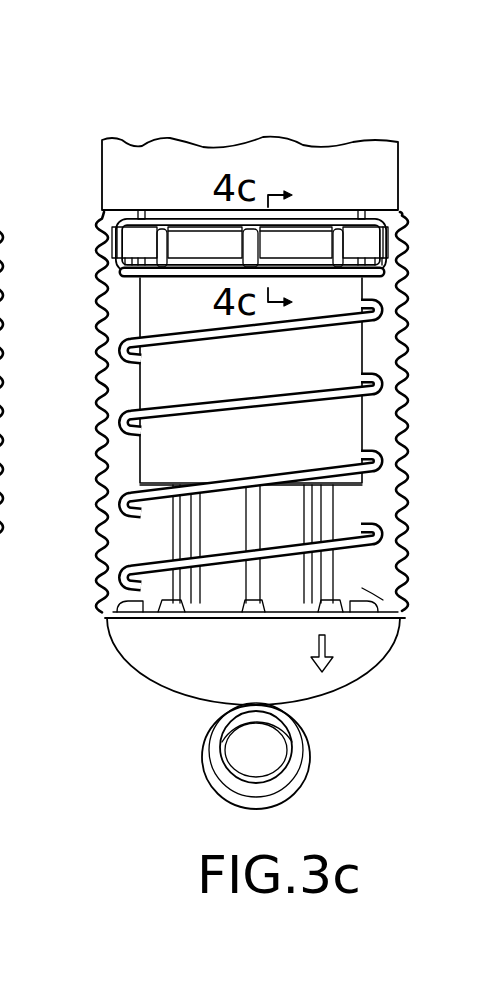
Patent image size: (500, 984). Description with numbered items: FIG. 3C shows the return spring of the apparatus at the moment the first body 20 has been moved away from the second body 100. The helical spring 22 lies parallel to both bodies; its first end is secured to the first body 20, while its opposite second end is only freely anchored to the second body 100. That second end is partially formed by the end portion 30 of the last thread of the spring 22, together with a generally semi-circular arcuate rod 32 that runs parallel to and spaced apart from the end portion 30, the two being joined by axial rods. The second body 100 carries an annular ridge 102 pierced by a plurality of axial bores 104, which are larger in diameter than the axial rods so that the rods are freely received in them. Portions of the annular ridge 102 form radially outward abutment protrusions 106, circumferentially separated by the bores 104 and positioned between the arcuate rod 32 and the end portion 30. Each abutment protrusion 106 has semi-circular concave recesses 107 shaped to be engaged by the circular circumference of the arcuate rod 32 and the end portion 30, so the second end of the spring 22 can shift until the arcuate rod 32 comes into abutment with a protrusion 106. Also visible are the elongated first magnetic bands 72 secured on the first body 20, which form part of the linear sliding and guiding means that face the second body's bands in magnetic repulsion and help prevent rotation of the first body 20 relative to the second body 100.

The second body 100 is at (100, 160).
The annular ridge 102 is at (378, 238).
The axial bores 104 is at (158, 232).
The abutment protrusions 106 is at (193, 235).
The concave recesses 107 is at (336, 228).
The arcuate rod 32 is at (372, 224).
The end portion of a last thread 30 is at (320, 277).
The helical return spring 22 is at (386, 396).
The first magnetic bands 72 is at (252, 519).
The first body 20 is at (115, 648).